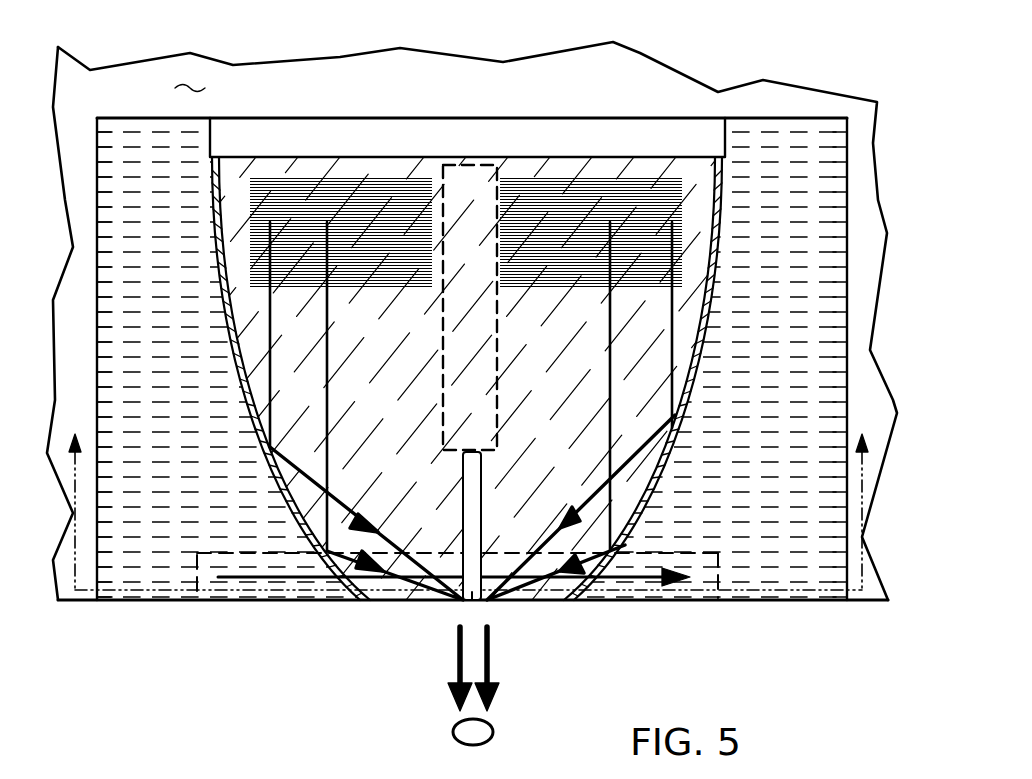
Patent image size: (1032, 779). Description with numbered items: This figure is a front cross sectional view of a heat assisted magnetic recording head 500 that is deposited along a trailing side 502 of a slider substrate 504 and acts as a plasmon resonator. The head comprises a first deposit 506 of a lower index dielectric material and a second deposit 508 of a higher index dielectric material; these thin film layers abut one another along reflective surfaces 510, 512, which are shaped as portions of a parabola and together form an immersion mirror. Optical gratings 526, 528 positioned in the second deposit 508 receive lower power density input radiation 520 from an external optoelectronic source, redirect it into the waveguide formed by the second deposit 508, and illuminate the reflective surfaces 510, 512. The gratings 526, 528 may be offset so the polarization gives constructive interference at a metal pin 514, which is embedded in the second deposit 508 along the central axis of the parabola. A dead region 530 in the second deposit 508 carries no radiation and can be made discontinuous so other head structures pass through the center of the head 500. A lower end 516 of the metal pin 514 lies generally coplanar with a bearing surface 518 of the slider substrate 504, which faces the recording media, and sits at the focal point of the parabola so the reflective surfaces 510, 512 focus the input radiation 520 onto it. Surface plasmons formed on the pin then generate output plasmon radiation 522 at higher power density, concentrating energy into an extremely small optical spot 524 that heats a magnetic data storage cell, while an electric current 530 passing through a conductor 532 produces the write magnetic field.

The heat assisted magnetic recording head 500 is at (743, 23).
The trailing side 502 is at (190, 88).
The slider substrate 504 is at (73, 54).
The first deposit 506 is at (238, 486).
The second deposit 508 is at (412, 459).
The reflective surface 510 is at (226, 338).
The reflective surface 512 is at (710, 322).
The metal pin 514 is at (486, 464).
The lower end 516 is at (470, 601).
The bearing surface 518 is at (73, 601).
The input radiation 520 is at (672, 222).
The output plasmon radiation 522 is at (457, 672).
The optical spot 524 is at (453, 725).
The optical grating 526 is at (410, 270).
The optical grating 528 is at (562, 270).
The dead region 530 is at (499, 370).
The conductor 532 is at (720, 578).